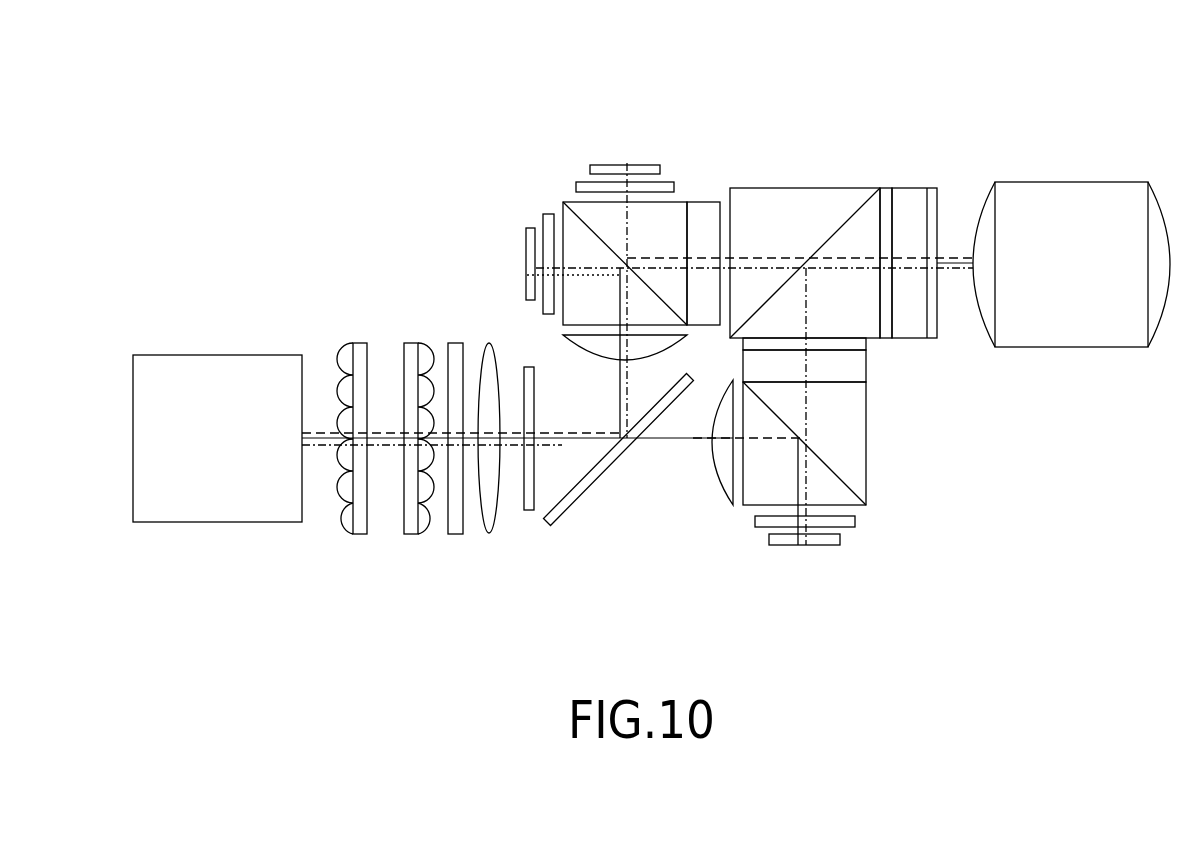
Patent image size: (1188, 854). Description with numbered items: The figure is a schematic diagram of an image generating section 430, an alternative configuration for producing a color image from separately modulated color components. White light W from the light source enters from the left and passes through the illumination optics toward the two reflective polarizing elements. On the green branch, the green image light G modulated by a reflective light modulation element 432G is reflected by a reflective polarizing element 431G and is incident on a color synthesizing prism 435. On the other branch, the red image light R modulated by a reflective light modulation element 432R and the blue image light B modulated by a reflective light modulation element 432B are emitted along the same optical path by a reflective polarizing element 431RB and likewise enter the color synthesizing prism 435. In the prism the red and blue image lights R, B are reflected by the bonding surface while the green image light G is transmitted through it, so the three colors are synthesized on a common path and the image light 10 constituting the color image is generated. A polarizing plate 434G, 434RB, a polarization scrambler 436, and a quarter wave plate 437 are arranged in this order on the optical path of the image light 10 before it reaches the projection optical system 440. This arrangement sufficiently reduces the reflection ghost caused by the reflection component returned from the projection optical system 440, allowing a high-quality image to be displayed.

The image generating section 430 is at (426, 142).
The reflective polarizing element 431RB is at (563, 202).
The reflective light modulation element 432R is at (625, 163).
The reflective light modulation element 432B is at (527, 252).
The polarizing plate 434RB is at (722, 205).
The color synthesizing prism 435 is at (813, 188).
The polarization scrambler 436 is at (885, 188).
The ¼ wave plate 437 is at (930, 188).
The image light 10 is at (954, 240).
The projection optical system 440 is at (1068, 182).
The polarizing plate 434G is at (867, 345).
The reflective polarizing element 431G is at (867, 440).
The reflective light modulation element 432G is at (800, 549).
The white light W is at (320, 418).
The red image light R is at (703, 258).
The blue image light B is at (757, 268).
The green image light G is at (667, 440).